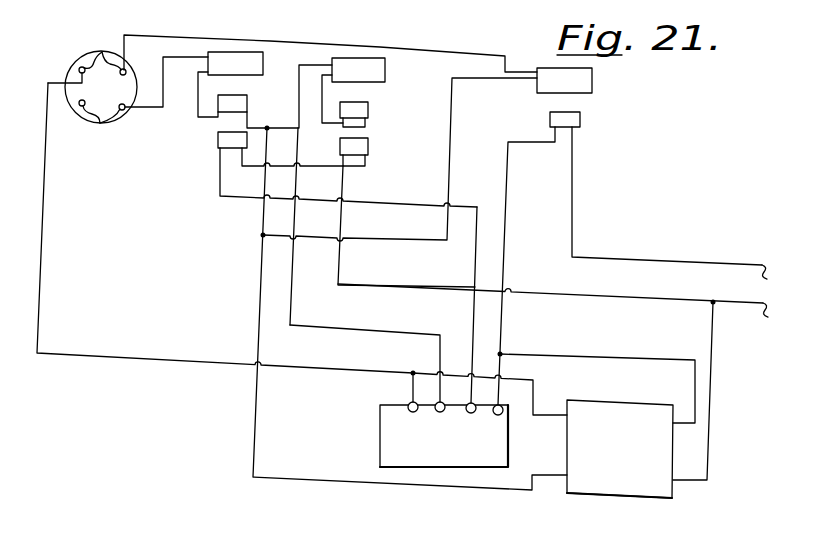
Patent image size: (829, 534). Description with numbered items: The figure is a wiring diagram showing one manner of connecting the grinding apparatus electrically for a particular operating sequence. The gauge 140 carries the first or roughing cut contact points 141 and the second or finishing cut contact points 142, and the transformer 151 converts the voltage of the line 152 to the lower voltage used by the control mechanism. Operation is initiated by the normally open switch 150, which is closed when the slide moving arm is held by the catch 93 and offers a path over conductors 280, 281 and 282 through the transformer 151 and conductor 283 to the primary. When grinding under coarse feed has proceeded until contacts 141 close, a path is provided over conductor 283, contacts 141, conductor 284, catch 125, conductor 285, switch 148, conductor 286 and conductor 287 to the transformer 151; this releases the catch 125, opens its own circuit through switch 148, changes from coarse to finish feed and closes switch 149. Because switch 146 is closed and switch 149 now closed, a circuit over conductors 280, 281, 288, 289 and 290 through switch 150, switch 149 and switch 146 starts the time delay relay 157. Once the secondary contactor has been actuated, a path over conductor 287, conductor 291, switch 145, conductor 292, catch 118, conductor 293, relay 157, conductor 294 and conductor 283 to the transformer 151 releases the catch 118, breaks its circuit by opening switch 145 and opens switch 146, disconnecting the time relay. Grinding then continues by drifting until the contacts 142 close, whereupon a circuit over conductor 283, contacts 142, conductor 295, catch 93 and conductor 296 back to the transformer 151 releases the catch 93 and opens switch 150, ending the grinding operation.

The catch 93 is at (592, 80).
The catch 118 is at (385, 70).
The catch 125 is at (263, 67).
The gauge 140 is at (82, 55).
The first or roughing cut contact points 141 is at (100, 123).
The second or finishing cut contact points 142 is at (102, 52).
The toggle switch 145 is at (368, 108).
The toggle switch 146 is at (368, 145).
The toggle switch 148 is at (247, 102).
The toggle switch 149 is at (217, 140).
The fifth switch 150 is at (580, 118).
The transformer 151 is at (635, 488).
The line 152 is at (756, 266).
The time delay relay 157 is at (546, 434).
The path 280 is at (574, 205).
The path 281 is at (508, 227).
The path 282 is at (557, 352).
The path 283 is at (100, 362).
The path 284 is at (147, 108).
The path 285 is at (195, 100).
The path 286 is at (267, 128).
The path 287 is at (259, 303).
The circuit 288 is at (471, 325).
The circuit 289 is at (299, 167).
The circuit 290 is at (340, 222).
The path 291 is at (298, 132).
The path 292 is at (322, 90).
The path 293 is at (397, 331).
The path 294 is at (410, 378).
The circuit 295 is at (400, 48).
The circuit 296 is at (475, 82).